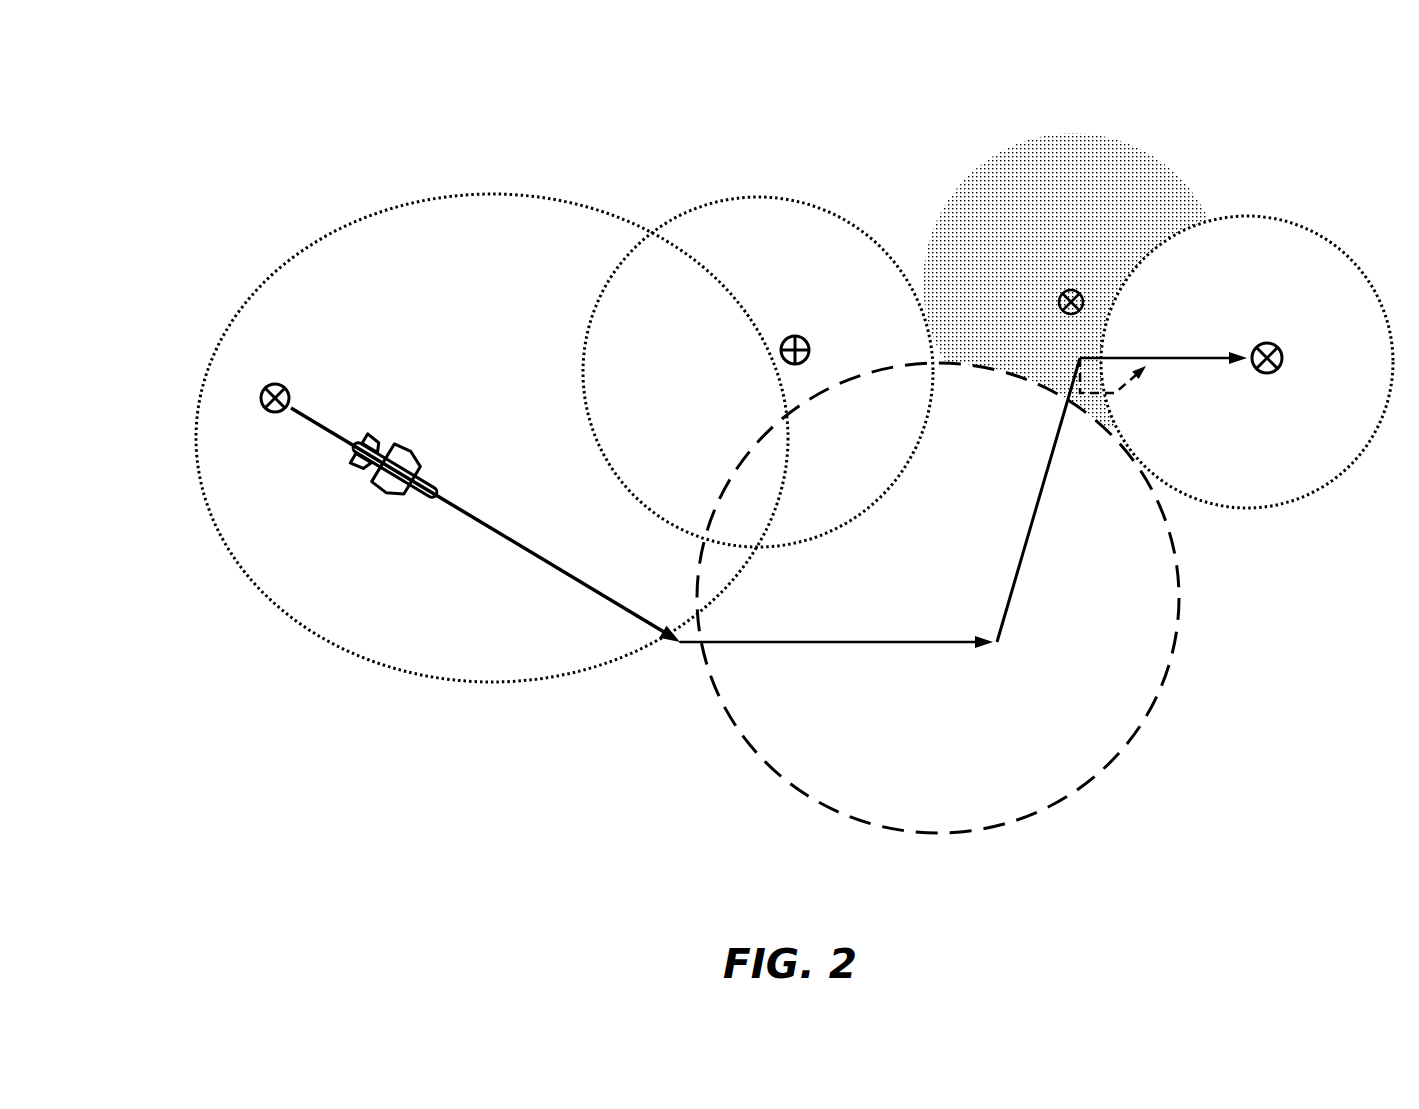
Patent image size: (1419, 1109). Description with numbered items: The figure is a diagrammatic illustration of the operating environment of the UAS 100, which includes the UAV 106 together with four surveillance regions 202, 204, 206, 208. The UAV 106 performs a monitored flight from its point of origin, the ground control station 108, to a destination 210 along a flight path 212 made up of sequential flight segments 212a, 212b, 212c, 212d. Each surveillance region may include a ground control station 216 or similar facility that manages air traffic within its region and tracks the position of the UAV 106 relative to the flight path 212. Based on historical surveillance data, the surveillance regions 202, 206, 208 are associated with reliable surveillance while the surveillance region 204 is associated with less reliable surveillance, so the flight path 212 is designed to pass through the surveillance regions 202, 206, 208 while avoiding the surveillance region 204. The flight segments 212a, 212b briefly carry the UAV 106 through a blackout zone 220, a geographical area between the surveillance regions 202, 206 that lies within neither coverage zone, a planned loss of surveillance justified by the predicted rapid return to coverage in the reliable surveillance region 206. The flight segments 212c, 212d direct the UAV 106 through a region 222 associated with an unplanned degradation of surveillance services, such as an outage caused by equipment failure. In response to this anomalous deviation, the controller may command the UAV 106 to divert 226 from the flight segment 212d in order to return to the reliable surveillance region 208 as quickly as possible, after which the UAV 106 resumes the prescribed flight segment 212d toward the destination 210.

The UAS 100 is at (147, 132).
The UAV 106 is at (386, 497).
The ground control station 108 is at (265, 387).
The surveillance region 202 is at (500, 251).
The surveillance region 204 is at (779, 248).
The surveillance region 206 is at (961, 805).
The surveillance region 208 is at (1306, 273).
The destination 210 is at (1278, 370).
The flight path 212 is at (768, 502).
The flight segment 212a is at (490, 533).
The flight segment 212b is at (917, 642).
The flight segment 212c is at (1036, 527).
The flight segment 212d is at (1200, 358).
The ground control station 216 is at (798, 336).
The blackout zone 220 is at (667, 665).
The region 222 is at (999, 231).
The divert 226 is at (1125, 405).